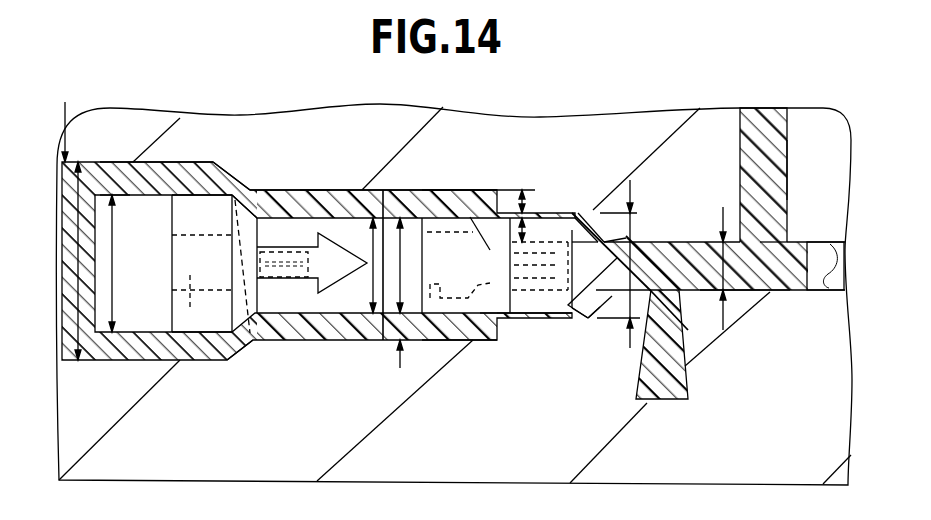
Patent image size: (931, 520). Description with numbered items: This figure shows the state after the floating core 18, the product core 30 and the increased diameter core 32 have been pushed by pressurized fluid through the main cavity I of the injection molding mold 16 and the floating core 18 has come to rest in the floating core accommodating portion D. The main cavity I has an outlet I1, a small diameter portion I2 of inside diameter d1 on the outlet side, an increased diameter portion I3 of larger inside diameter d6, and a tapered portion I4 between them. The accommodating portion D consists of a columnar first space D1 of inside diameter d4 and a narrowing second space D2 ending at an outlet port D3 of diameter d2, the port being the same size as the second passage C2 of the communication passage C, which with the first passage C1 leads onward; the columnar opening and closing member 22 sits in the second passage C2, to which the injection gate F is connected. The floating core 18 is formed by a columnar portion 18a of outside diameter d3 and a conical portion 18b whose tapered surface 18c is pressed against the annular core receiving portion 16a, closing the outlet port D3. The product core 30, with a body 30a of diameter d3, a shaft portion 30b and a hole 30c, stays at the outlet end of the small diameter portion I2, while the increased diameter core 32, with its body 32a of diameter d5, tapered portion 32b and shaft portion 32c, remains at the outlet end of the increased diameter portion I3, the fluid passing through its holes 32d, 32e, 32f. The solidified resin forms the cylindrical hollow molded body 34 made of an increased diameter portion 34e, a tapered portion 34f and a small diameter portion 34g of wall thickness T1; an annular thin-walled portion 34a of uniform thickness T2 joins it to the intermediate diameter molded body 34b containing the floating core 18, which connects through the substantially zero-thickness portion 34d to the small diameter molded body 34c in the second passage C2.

The injection molding mold 16 is at (297, 107).
The core receiving portion 16a is at (652, 399).
The floating core 18 is at (525, 320).
The columnar portion 18a is at (545, 318).
The conical portion 18b is at (592, 305).
The tapered surface 18c is at (592, 284).
The opening and closing member 22 is at (832, 290).
The product core 30 is at (409, 243).
The body 30a is at (435, 215).
The shaft portion 30b is at (493, 277).
The hole 30c is at (426, 320).
The increased diameter core 32 is at (160, 263).
The body 32a is at (197, 215).
The tapered portion 32b is at (223, 186).
The shaft portion 32c is at (291, 270).
The hole 32d is at (190, 300).
The hole 32e is at (253, 339).
The hole 32f is at (272, 273).
The hollow molded body 34 is at (218, 369).
The thin-walled portion 34a is at (502, 320).
The intermediate diameter molded body 34b is at (596, 300).
The small diameter molded body 34c is at (663, 241).
The portion having a wall thickness of substantially zero 34d is at (606, 240).
The increased diameter portion 34e is at (162, 180).
The tapered portion 34f is at (243, 185).
The small diameter portion 34g is at (350, 200).
The communication passage C is at (776, 252).
The first passage C1 is at (778, 168).
The second passage C2 is at (772, 280).
The floating core accommodating portion D is at (470, 217).
The first space D1 is at (545, 222).
The second space D2 is at (601, 292).
The outlet port D3 is at (594, 228).
The injection gate F is at (677, 306).
The main cavity I is at (63, 121).
The outlet I1 is at (488, 318).
The small diameter portion I2 is at (317, 192).
The increased diameter portion I3 is at (118, 192).
The tapered portion I4 is at (255, 198).
The wall thickness T1 is at (392, 344).
The wall thickness T2 is at (516, 193).
The inside diameter d1 is at (406, 265).
The diameter d2 is at (721, 234).
The outside diameter d3 is at (368, 245).
The inside diameter d4 is at (633, 235).
The outside diameter d5 is at (124, 263).
The inside diameter d6 is at (75, 278).